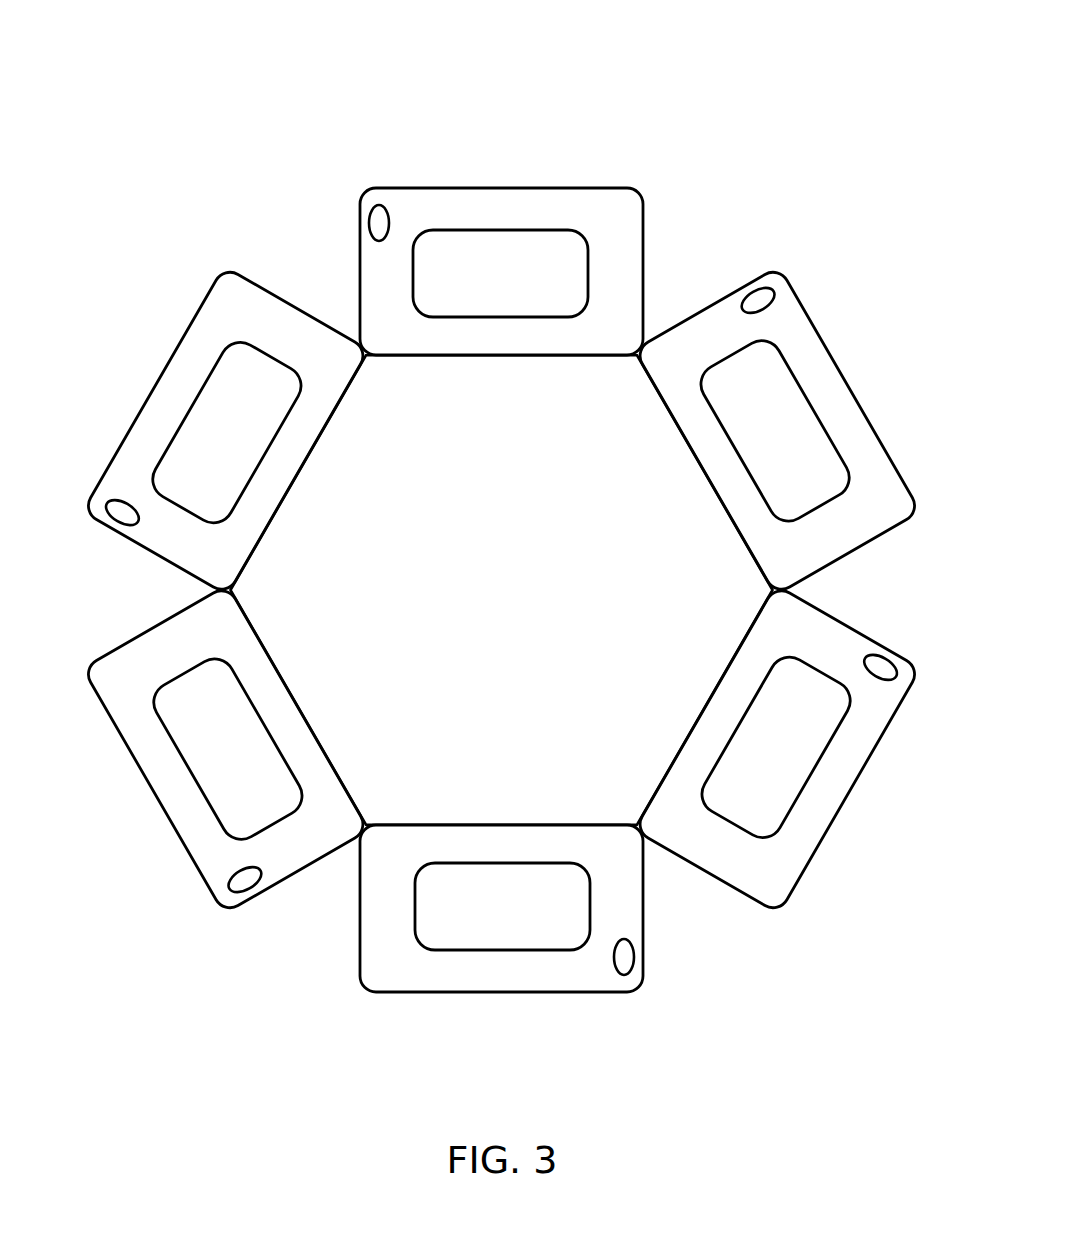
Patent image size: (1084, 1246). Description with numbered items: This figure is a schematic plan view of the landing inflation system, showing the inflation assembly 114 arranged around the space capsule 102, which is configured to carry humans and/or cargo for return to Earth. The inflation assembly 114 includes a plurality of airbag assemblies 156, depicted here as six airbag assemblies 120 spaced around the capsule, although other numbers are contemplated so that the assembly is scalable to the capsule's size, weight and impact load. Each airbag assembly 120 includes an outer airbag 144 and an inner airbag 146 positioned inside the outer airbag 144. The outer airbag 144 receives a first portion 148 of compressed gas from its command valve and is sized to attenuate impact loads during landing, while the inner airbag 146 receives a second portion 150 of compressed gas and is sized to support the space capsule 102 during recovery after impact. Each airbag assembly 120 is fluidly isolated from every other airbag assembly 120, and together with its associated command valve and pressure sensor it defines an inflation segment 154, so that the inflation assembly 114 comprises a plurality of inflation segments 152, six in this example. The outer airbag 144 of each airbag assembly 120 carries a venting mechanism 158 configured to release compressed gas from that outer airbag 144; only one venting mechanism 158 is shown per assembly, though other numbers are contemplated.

The space capsule 102 is at (480, 603).
The inflation assembly 114 is at (501, 555).
The airbag assembly 120 is at (501, 589).
The outer airbag 144 is at (501, 590).
The inner airbag 146 is at (501, 590).
The first portion of compressed gas 148 is at (502, 590).
The second portion of compressed gas 150 is at (501, 590).
The plurality of inflation segments 152 is at (812, 115).
The inflation segment 154 is at (501, 587).
The plurality of airbag assemblies 156 is at (864, 149).
The venting mechanism 158 is at (499, 590).